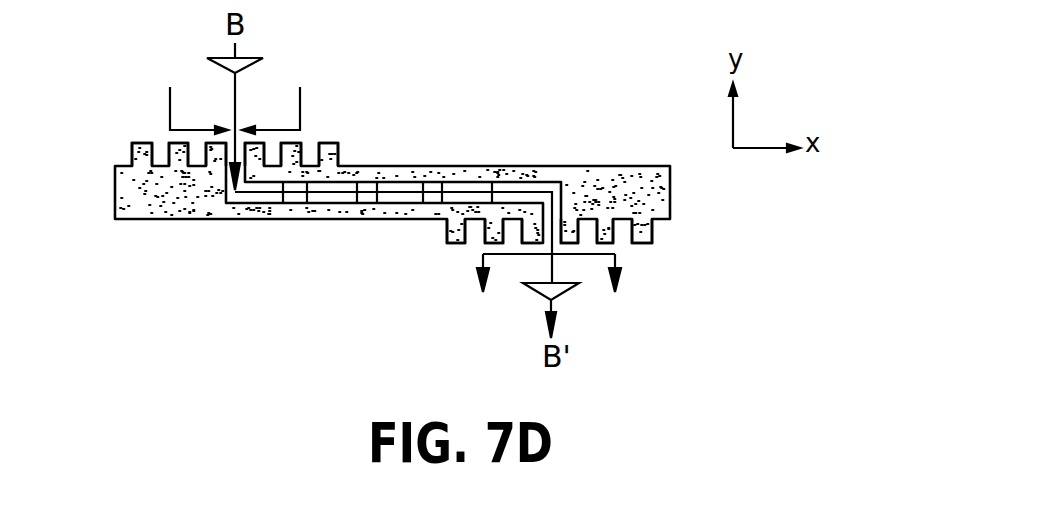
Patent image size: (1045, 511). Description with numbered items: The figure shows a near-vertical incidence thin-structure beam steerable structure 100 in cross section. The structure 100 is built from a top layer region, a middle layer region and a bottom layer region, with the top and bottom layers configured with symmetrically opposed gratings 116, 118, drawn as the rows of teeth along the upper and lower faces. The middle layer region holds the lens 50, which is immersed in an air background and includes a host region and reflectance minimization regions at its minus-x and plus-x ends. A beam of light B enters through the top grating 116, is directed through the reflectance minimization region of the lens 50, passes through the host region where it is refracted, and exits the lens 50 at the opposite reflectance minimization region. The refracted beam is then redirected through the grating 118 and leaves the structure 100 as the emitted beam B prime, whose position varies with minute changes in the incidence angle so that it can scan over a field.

The beam steerable structure 100 is at (451, 158).
The top grating 116 is at (338, 157).
The bottom grating 118 is at (653, 230).
The lens 50 is at (330, 198).